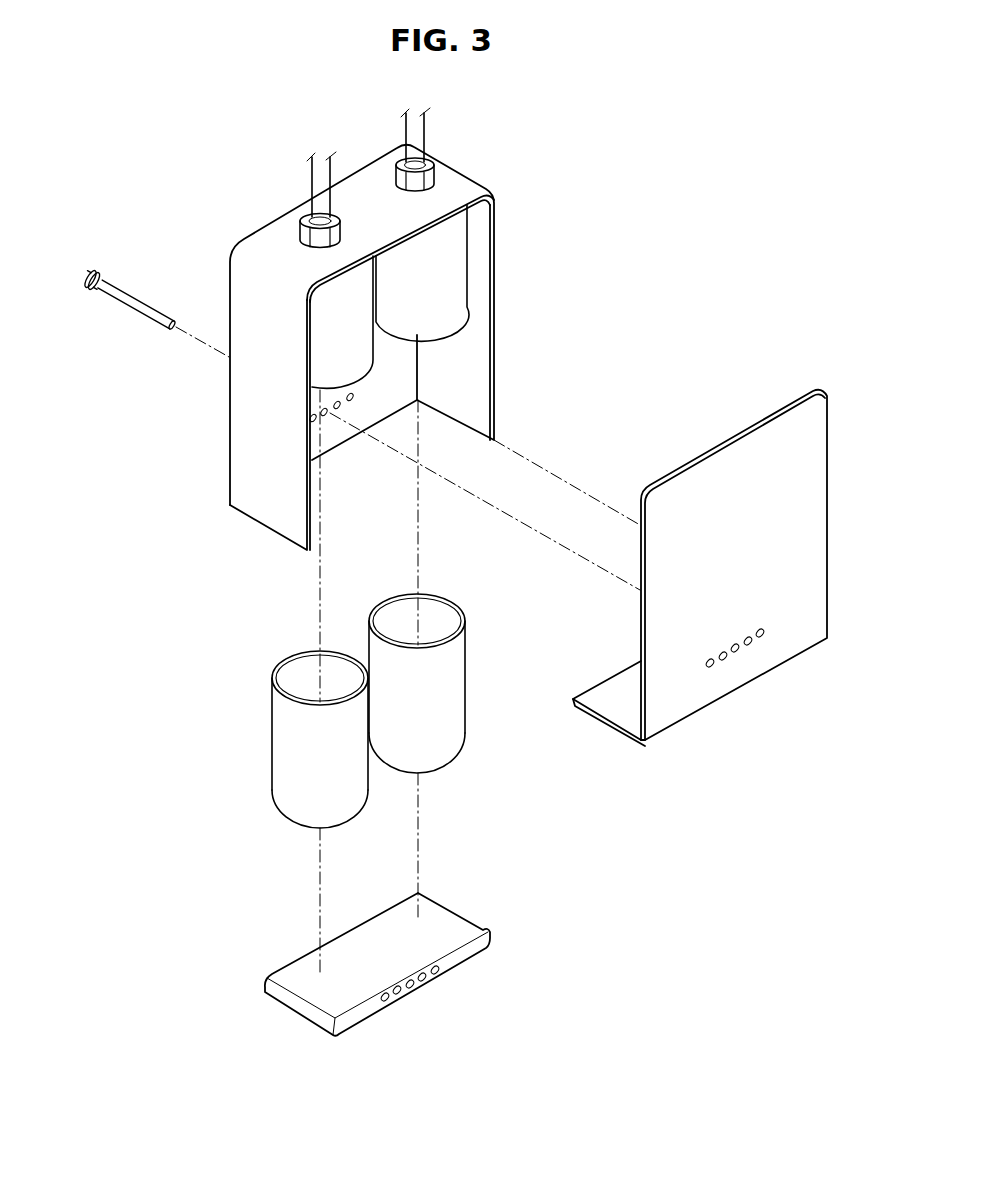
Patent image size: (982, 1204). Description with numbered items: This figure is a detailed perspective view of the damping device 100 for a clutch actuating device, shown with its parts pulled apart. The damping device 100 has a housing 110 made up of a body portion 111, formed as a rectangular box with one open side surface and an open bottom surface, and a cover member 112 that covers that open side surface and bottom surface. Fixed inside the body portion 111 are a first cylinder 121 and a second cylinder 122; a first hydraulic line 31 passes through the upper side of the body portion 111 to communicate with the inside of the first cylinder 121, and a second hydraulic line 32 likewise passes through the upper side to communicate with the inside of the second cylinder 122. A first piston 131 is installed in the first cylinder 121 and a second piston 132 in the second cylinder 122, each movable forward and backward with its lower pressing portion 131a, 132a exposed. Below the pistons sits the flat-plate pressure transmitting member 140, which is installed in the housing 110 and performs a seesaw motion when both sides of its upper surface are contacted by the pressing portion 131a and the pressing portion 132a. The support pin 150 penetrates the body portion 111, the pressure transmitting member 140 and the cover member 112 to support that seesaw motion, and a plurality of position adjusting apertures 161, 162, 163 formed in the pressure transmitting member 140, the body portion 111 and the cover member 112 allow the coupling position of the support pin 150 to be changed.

The damping device 100 is at (138, 596).
The housing 110 is at (678, 348).
The body portion 111 is at (498, 357).
The cover member 112 is at (720, 436).
The first cylinder 121 is at (457, 263).
The second cylinder 122 is at (332, 337).
The first piston 131 is at (458, 708).
The pressing portion 131a is at (440, 774).
The second piston 132 is at (283, 742).
The pressing portion 132a is at (300, 830).
The pressure transmitting member 140 is at (300, 1000).
The support pin 150 is at (128, 300).
The position adjusting apertures 161 is at (345, 400).
The position adjusting apertures 162 is at (410, 995).
The position adjusting apertures 163 is at (742, 655).
The first hydraulic line 31 is at (422, 136).
The second hydraulic line 32 is at (318, 184).